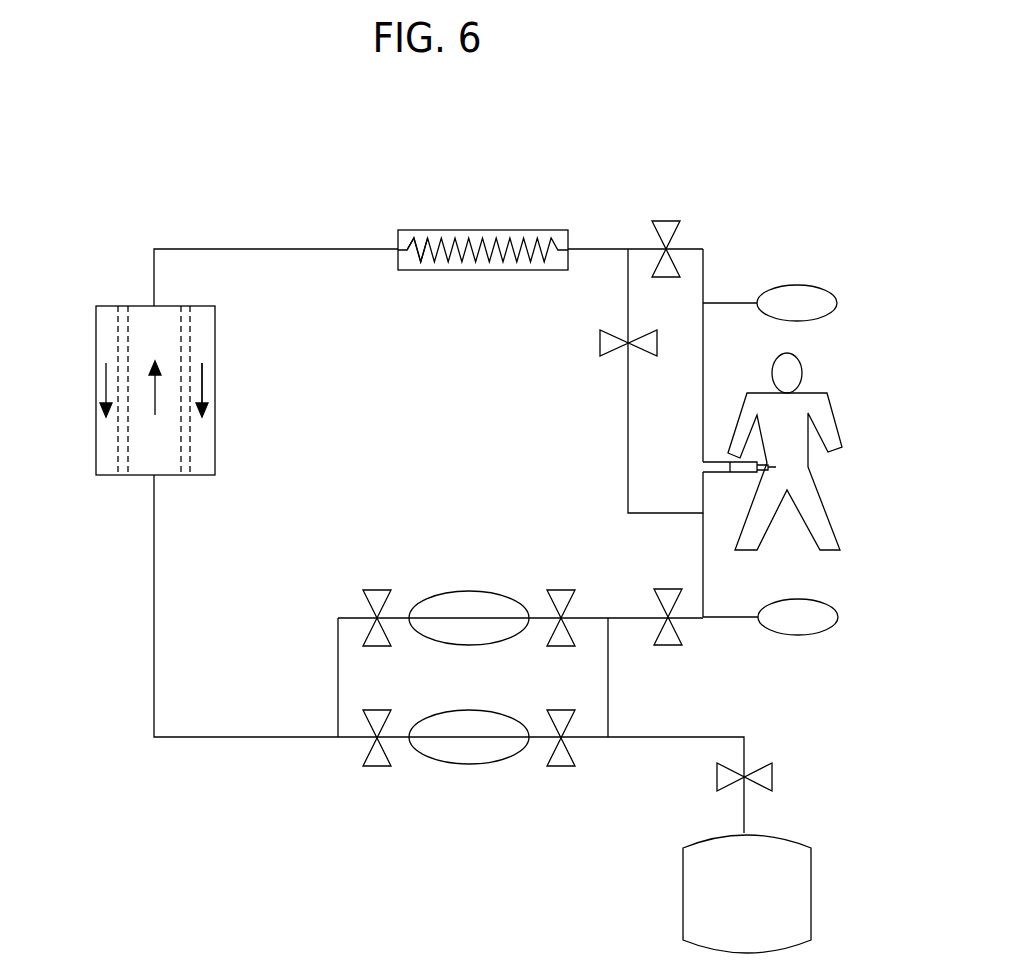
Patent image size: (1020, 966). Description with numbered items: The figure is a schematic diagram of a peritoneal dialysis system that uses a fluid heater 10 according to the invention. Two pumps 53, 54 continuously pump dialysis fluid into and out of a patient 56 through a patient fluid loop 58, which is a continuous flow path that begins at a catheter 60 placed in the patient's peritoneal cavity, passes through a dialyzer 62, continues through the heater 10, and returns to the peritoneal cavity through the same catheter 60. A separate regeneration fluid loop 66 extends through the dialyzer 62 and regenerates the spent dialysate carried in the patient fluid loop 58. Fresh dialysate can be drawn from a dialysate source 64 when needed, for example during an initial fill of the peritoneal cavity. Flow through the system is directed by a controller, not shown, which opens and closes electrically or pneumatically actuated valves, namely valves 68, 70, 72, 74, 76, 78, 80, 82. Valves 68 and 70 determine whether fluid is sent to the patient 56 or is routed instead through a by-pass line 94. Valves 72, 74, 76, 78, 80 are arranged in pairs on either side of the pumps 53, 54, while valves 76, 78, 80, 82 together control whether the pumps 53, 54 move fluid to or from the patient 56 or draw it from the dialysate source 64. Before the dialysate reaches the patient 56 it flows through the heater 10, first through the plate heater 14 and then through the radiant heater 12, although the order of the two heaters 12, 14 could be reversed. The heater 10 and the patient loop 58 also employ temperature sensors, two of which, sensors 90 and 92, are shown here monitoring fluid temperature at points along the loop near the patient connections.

The fluid heater 10 is at (466, 260).
The radiant heater 12 is at (522, 241).
The plate heater 14 is at (422, 242).
The pump 53 is at (469, 592).
The pump 54 is at (469, 711).
The patient 56 is at (802, 368).
The patient fluid loop 58 is at (396, 481).
The catheter 60 is at (736, 474).
The dialyzer 62 is at (96, 430).
The dialysate source 64 is at (808, 846).
The regeneration fluid loop 66 is at (203, 375).
The valve 68 is at (678, 224).
The valve 70 is at (600, 343).
The valve 72 is at (375, 591).
The valve 74 is at (559, 591).
The valve 76 is at (668, 590).
The valve 78 is at (378, 711).
The valve 80 is at (560, 711).
The valve 82 is at (772, 768).
The temperature sensor 90 is at (808, 286).
The temperature sensor 92 is at (810, 600).
The by-pass line 94 is at (628, 462).